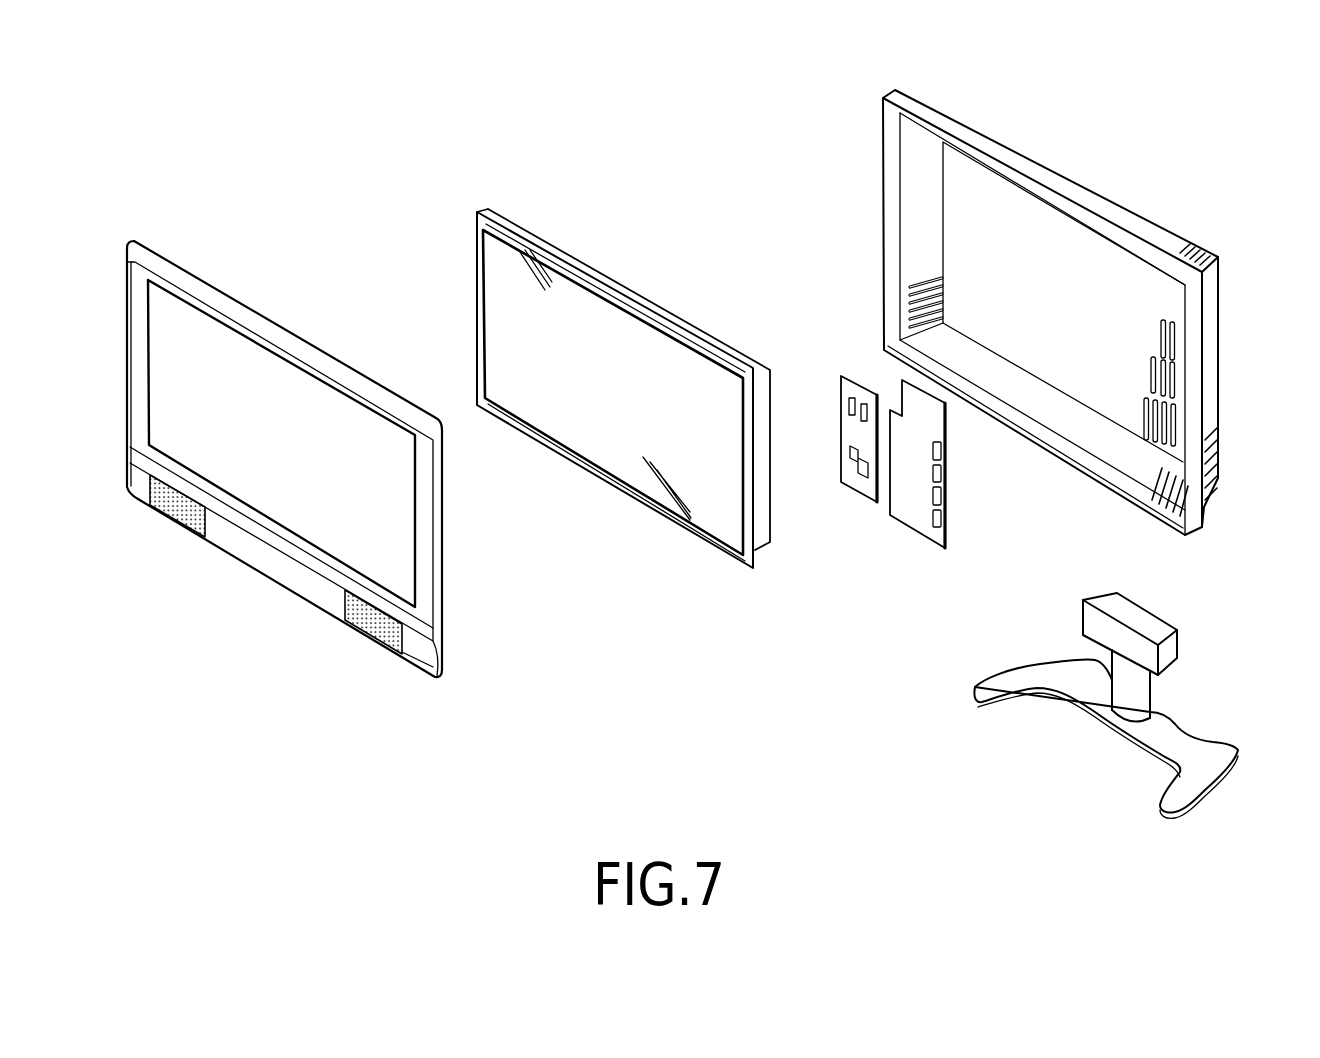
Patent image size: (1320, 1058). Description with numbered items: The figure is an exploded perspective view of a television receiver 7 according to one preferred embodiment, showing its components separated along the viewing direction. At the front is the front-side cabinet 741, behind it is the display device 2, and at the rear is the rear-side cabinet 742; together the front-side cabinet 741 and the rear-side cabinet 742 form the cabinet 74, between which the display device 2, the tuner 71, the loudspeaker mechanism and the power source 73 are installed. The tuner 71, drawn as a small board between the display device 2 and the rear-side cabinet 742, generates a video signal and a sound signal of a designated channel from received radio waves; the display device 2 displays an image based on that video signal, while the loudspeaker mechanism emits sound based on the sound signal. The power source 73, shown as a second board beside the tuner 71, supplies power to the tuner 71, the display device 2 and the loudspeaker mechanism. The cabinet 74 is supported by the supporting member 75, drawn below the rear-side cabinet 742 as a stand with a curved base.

The television receiver 7 is at (686, 446).
The display device 2 is at (553, 240).
The tuner 71 is at (857, 492).
The power source 73 is at (948, 477).
The cabinet 74 is at (663, 381).
The front-side cabinet 741 is at (275, 464).
The rear-side cabinet 742 is at (995, 120).
The supporting member 75 is at (1187, 723).